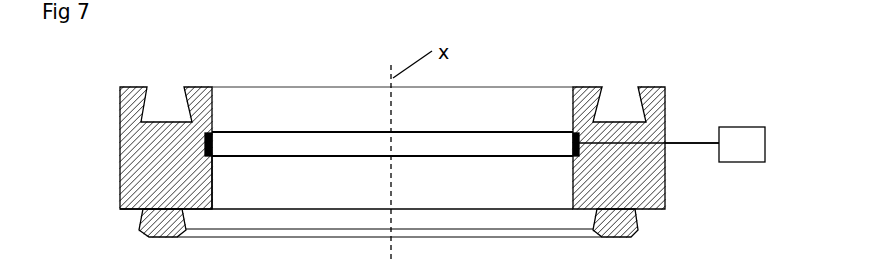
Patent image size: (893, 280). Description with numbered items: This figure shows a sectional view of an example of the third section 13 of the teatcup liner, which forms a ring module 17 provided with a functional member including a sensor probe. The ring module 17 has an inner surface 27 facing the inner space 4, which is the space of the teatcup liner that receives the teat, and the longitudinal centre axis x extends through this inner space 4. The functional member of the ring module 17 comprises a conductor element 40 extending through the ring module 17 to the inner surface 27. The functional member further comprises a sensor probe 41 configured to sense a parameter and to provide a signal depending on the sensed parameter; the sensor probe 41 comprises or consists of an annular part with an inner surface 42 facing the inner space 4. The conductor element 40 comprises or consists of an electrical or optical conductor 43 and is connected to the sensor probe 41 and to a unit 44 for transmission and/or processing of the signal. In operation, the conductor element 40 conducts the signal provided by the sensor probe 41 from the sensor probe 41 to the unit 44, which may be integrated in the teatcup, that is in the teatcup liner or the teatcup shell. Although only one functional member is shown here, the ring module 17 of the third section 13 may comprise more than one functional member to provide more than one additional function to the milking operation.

The inner space 4 is at (369, 198).
The third section 13 is at (128, 133).
The ring module 17 is at (130, 178).
The inner surface 27 is at (213, 180).
The conductor element 40 is at (701, 142).
The sensor probe 41 is at (573, 131).
The inner surface 42 is at (214, 147).
The electrical or optical conductor 43 is at (683, 144).
The unit 44 is at (732, 135).